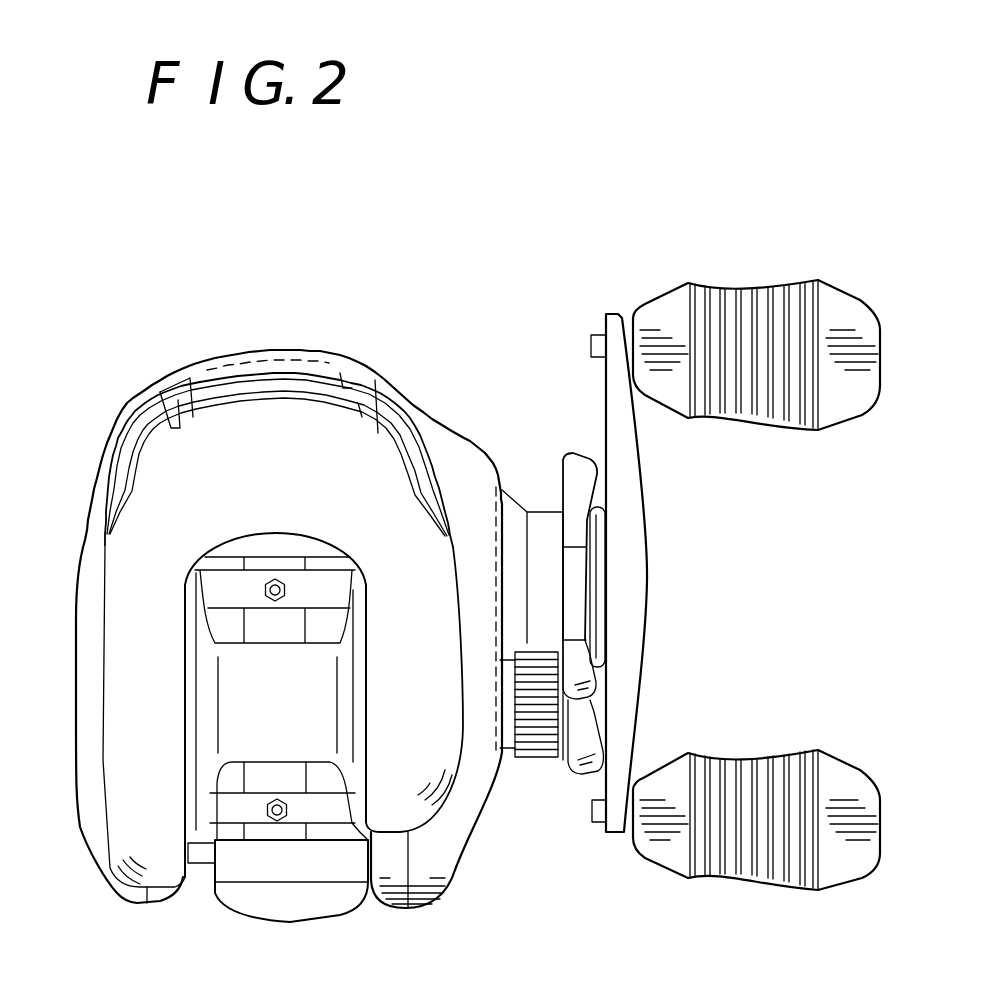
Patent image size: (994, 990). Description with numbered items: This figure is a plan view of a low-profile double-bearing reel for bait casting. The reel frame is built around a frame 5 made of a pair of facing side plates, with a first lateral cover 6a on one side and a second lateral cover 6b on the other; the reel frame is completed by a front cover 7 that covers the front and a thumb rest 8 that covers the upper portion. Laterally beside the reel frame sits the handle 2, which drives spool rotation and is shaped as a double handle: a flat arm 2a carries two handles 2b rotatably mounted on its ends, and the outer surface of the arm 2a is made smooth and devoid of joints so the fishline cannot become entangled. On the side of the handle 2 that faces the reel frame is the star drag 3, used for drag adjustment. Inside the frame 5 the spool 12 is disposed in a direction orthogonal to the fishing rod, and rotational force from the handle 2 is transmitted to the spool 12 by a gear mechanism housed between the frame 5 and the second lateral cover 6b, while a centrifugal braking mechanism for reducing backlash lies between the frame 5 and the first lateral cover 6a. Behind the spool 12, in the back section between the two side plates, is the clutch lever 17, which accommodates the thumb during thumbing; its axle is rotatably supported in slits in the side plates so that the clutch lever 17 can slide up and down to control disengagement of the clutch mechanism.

The handle 2 is at (600, 559).
The arm 2a is at (632, 488).
The handles 2b is at (795, 282).
The star drag 3 is at (572, 460).
The frame 5 is at (177, 410).
The first lateral cover 6a is at (110, 450).
The second lateral cover 6b is at (453, 440).
The front cover 7 is at (190, 385).
The thumb rest 8 is at (338, 437).
The spool 12 is at (228, 730).
The clutch lever 17 is at (290, 912).